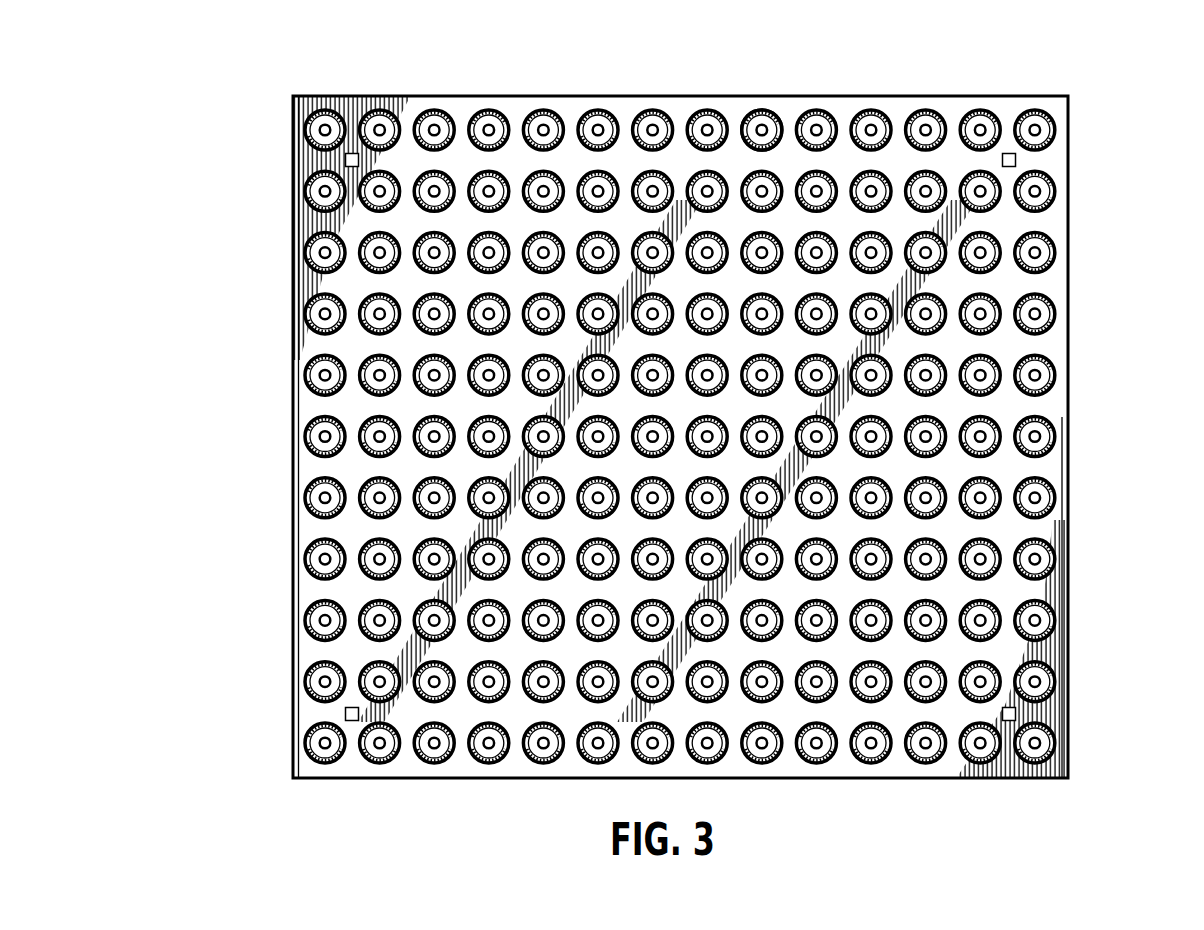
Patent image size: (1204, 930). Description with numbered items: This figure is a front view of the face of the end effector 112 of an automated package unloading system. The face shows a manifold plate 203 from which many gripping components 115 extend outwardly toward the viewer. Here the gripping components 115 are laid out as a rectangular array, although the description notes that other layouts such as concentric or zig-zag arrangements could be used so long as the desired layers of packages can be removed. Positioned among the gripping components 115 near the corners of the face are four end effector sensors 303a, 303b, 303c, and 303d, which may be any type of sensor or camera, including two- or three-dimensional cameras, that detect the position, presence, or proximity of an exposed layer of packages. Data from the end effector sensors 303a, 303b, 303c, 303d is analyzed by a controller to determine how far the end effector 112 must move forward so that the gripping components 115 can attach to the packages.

The end effector 112 is at (313, 56).
The gripping components 115 is at (768, 116).
The manifold plate 203 is at (1056, 410).
The end effector sensor 303a is at (345, 160).
The end effector sensor 303b is at (345, 714).
The end effector sensor 303c is at (1016, 160).
The end effector sensor 303d is at (1016, 714).